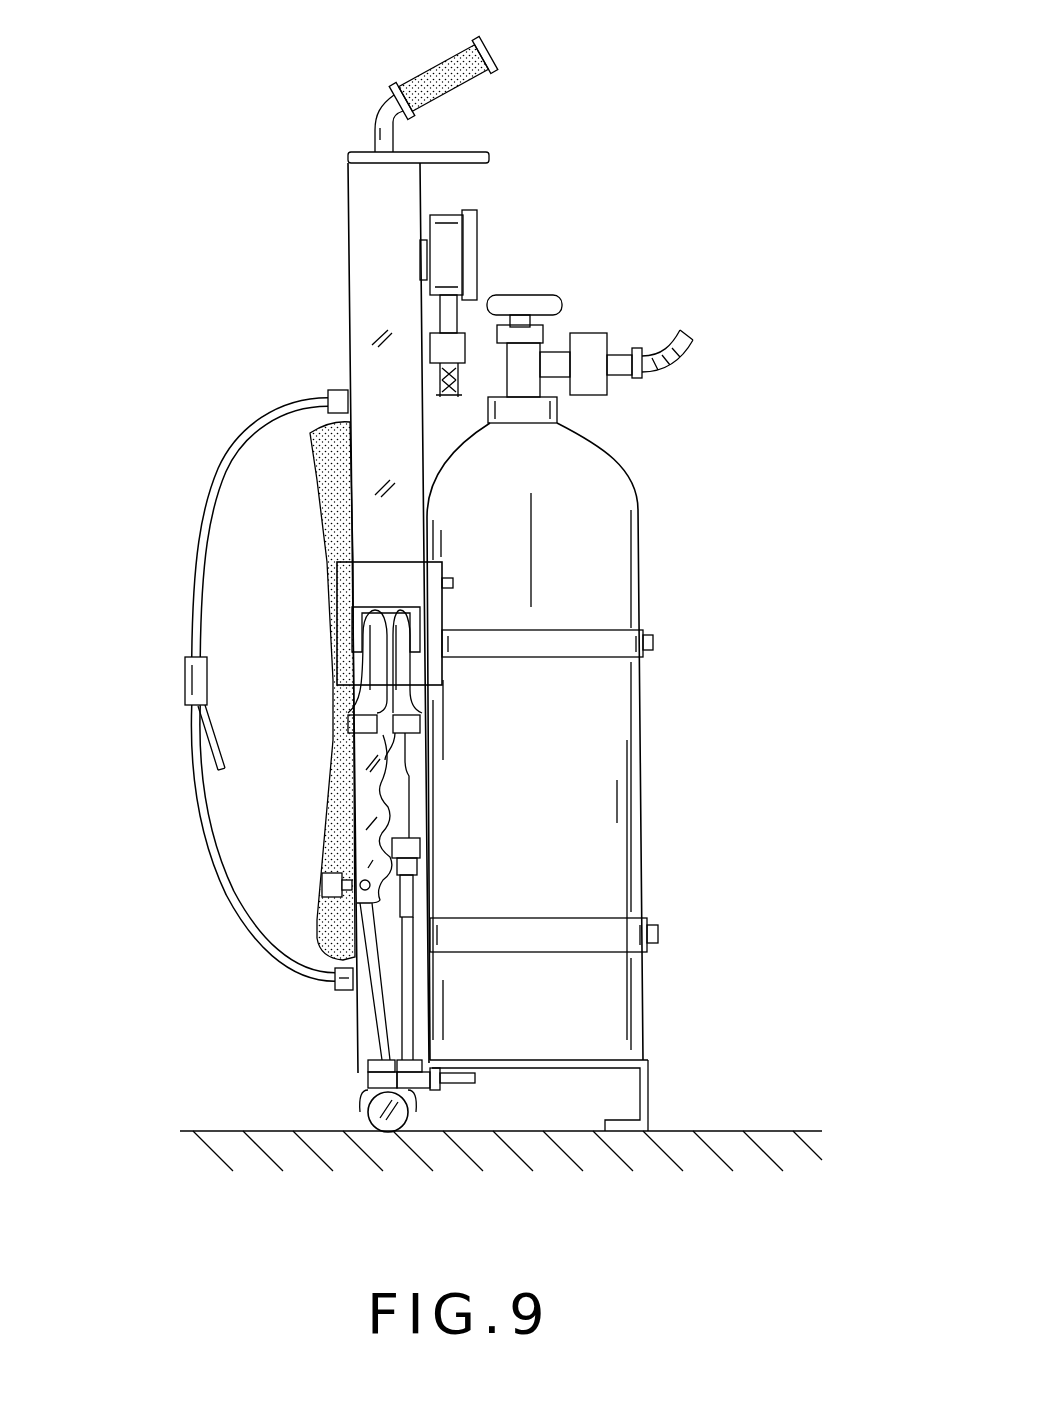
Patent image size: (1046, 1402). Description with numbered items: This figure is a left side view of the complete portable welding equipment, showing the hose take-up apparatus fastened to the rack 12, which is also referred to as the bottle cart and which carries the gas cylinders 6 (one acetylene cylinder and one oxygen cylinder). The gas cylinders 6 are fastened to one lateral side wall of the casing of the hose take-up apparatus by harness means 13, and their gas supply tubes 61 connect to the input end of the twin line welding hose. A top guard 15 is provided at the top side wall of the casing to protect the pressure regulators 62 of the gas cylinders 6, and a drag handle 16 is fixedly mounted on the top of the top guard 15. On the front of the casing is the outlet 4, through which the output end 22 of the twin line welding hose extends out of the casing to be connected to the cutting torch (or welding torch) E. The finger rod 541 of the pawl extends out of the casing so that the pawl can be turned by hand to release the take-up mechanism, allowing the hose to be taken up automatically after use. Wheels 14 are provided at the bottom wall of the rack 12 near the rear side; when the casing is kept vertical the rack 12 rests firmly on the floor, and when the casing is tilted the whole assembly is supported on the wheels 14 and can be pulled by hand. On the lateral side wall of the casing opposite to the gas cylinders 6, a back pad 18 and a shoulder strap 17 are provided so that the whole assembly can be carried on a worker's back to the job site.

The drag handle 16 is at (445, 78).
The top guard 15 is at (470, 157).
The pressure regulator 62 is at (468, 243).
The gas supply tube 61 is at (680, 360).
The outlet 4 is at (357, 612).
The finger rod 541 is at (447, 583).
The output end 22 is at (395, 632).
The shoulder strap 17 is at (197, 562).
The back pad 18 is at (330, 750).
The gas cylinder 6 is at (598, 730).
The cutting torch E is at (368, 810).
The harness means 13 is at (597, 932).
The wheel 14 is at (390, 1114).
The rack 12 is at (565, 1067).